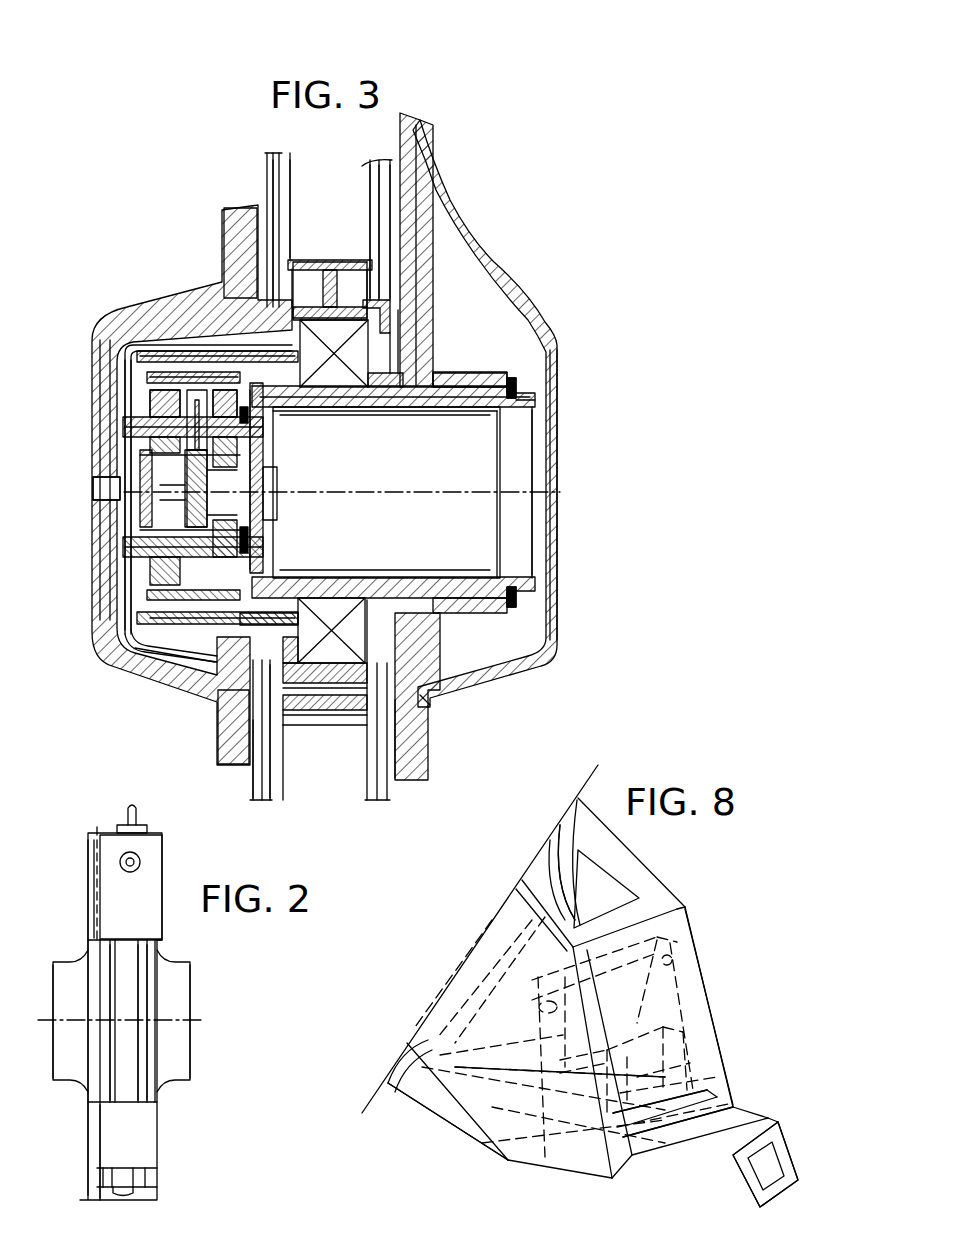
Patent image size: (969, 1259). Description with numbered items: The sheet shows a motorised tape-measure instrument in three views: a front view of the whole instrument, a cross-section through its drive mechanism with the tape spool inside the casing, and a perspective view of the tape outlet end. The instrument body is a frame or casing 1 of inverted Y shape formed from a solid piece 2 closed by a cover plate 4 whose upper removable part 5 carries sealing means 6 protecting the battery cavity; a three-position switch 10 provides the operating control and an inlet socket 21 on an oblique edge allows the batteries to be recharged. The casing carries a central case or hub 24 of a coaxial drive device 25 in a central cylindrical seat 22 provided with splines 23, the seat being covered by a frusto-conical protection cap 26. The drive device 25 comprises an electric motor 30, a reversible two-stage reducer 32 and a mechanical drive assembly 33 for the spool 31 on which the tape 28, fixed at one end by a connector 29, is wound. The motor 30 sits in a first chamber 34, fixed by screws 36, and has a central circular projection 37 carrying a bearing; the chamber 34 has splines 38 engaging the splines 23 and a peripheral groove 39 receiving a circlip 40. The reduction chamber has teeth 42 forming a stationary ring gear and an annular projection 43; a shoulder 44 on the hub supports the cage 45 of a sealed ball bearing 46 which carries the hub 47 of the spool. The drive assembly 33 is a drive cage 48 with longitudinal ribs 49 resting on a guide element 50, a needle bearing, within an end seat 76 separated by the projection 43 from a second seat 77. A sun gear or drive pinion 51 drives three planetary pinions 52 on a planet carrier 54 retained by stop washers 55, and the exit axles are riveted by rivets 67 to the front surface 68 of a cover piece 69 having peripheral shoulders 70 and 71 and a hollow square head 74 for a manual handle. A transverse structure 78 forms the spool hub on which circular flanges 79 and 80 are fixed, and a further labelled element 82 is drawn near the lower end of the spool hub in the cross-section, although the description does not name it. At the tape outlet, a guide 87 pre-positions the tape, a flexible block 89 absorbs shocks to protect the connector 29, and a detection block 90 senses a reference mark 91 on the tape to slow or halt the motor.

In FIG. 2, the frame or casing 1 is at (72, 832).
In FIG. 2, the solid piece 2 is at (148, 922).
In FIG. 2, the cover plate 4 is at (90, 1143).
In FIG. 2, the upper removable part 5 is at (92, 866).
In FIG. 2, the sealing means 6 is at (100, 859).
In FIG. 2, the switch 10 is at (137, 820).
In FIG. 2, the inlet socket 21 is at (142, 862).
In FIG. 3, the central cylindrical seat 22 is at (470, 352).
In FIG. 3, the splines 23 is at (492, 390).
In FIG. 3, the central case or hub 24 is at (530, 663).
In FIG. 3, the coaxial drive device 25 is at (205, 617).
In FIG. 3, the protection cap 26 is at (557, 470).
In FIG. 2, the protection cap 26 is at (178, 990).
In FIG. 8, the tape 28 is at (698, 1140).
In FIG. 2, the connector 29 is at (125, 1190).
In FIG. 8, the connector 29 is at (749, 1180).
In FIG. 3, the electric motor 30 is at (470, 553).
In FIG. 3, the spool 31 is at (378, 137).
In FIG. 2, the spool 31 is at (105, 1075).
In FIG. 8, the spool 31 is at (563, 868).
In FIG. 3, the reversible two-stage reducer 32 is at (83, 590).
In FIG. 3, the mechanical drive assembly 33 is at (82, 548).
In FIG. 3, the first chamber 34 is at (410, 405).
In FIG. 3, the screws 36 is at (238, 372).
In FIG. 3, the central circular projection 37 is at (290, 503).
In FIG. 3, the splines 38 is at (522, 399).
In FIG. 3, the transverse peripheral groove 39 is at (520, 598).
In FIG. 3, the circlip 40 is at (520, 385).
In FIG. 3, the teeth 42 is at (177, 637).
In FIG. 3, the annular projection 43 is at (175, 358).
In FIG. 3, the shoulder 44 is at (212, 222).
In FIG. 3, the cage 45 is at (390, 250).
In FIG. 3, the sealed ball bearing 46 is at (468, 209).
In FIG. 3, the hub 47 is at (330, 158).
In FIG. 3, the drive cage 48 is at (118, 352).
In FIG. 3, the longitudinal strengthening ribs 49 is at (135, 360).
In FIG. 3, the guide element 50 is at (153, 343).
In FIG. 3, the sun gear or drive pinion 51 is at (190, 640).
In FIG. 3, the planetary pinions 52 is at (128, 358).
In FIG. 3, the planet carrier 54 is at (117, 500).
In FIG. 3, the stop washers 55 is at (300, 455).
In FIG. 3, the rivets 67 is at (125, 428).
In FIG. 3, the front surface 68 is at (120, 390).
In FIG. 3, the cover piece 69 is at (126, 380).
In FIG. 3, the peripheral shoulder 70 is at (238, 300).
In FIG. 3, the peripheral shoulder 71 is at (328, 260).
In FIG. 3, the hollow square head 74 is at (110, 482).
In FIG. 3, the end seat 76 is at (217, 623).
In FIG. 3, the seat 77 is at (252, 778).
In FIG. 3, the transverse structure 78 is at (343, 307).
In FIG. 3, the circular flange 79 is at (277, 795).
In FIG. 2, the circular flange 79 is at (110, 975).
In FIG. 3, the circular flange 80 is at (375, 795).
In FIG. 2, the circular flange 80 is at (140, 1065).
In FIG. 3, the tube end 82 is at (253, 720).
In FIG. 8, the guide 87 is at (470, 1150).
In FIG. 8, the block 89 is at (560, 1135).
In FIG. 8, the detection block 90 is at (712, 1043).
In FIG. 8, the reference mark 91 is at (448, 1103).